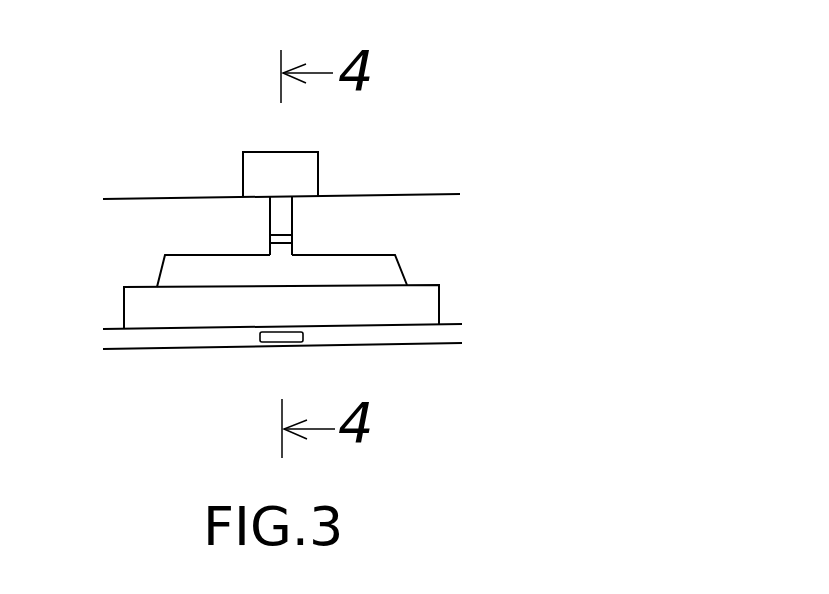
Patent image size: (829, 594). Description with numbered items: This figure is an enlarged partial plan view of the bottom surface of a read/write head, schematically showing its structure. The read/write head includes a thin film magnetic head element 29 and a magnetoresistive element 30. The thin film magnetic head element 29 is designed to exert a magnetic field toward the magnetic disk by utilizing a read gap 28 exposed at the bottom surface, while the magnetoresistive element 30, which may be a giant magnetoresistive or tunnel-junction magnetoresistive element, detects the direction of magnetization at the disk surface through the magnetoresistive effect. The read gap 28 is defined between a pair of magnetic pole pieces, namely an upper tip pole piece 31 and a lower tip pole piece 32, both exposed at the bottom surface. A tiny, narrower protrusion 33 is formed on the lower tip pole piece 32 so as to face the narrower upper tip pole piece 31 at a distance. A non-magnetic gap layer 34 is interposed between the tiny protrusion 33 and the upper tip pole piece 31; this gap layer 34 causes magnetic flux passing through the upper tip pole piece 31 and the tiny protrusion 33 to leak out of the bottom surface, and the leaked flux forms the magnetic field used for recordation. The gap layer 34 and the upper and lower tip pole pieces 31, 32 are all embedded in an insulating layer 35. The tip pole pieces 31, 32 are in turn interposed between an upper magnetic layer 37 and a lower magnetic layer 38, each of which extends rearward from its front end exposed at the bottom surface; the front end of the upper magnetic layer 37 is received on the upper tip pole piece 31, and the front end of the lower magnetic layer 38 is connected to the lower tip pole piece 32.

The read gap 28 is at (295, 238).
The thin film magnetic head element 29 is at (331, 152).
The magnetoresistive (MR) element 30 is at (305, 338).
The upper tip pole piece 31 is at (266, 211).
The lower tip pole piece 32 is at (163, 259).
The tiny protrusion 33 is at (295, 249).
The gap layer 34 is at (269, 238).
The insulating layer 35 is at (438, 186).
The upper magnetic layer 37 is at (255, 151).
The lower magnetic layer 38 is at (124, 307).